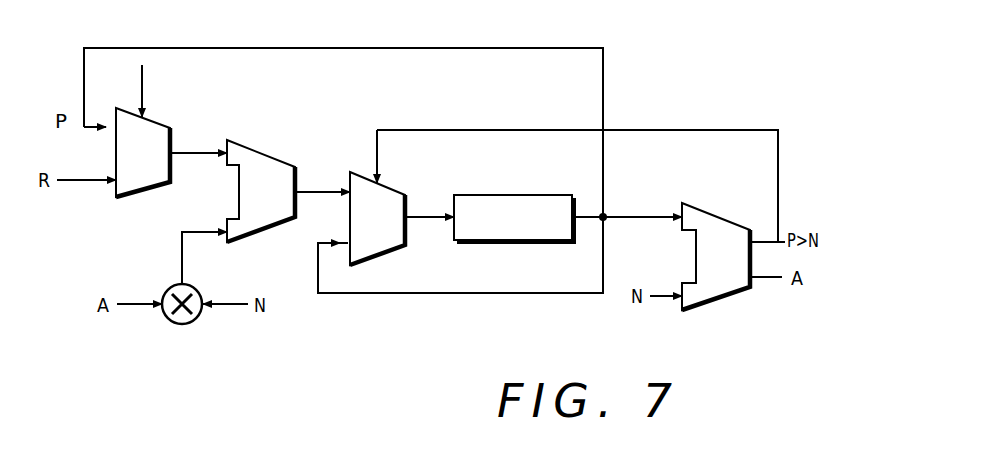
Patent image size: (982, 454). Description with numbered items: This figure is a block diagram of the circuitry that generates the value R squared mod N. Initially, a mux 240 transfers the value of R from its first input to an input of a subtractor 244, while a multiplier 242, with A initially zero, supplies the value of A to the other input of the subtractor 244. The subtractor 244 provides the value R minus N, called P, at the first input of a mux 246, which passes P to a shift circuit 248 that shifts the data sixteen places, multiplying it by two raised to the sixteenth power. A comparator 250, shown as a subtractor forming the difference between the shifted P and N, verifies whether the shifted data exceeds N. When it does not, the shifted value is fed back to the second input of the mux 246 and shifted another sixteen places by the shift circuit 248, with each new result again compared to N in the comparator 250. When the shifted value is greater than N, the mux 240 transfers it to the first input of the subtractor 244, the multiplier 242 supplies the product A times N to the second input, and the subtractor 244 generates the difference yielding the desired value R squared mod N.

The mux 240 is at (138, 198).
The multiplier 242 is at (178, 327).
The subtractor 244 is at (265, 156).
The mux 246 is at (392, 252).
The shift circuit 248 is at (513, 194).
The comparator 250 is at (718, 217).